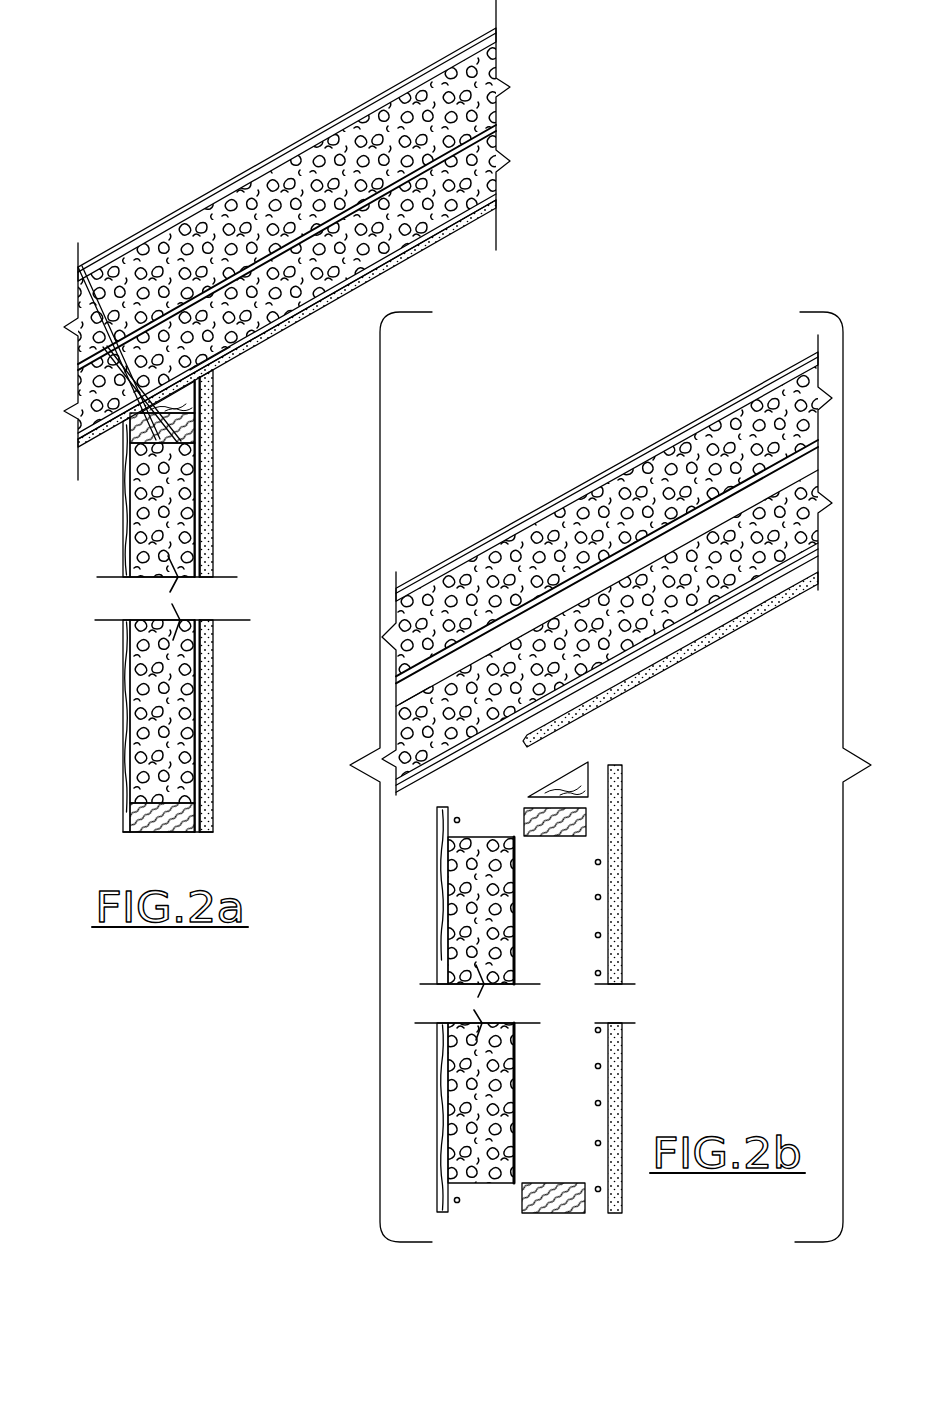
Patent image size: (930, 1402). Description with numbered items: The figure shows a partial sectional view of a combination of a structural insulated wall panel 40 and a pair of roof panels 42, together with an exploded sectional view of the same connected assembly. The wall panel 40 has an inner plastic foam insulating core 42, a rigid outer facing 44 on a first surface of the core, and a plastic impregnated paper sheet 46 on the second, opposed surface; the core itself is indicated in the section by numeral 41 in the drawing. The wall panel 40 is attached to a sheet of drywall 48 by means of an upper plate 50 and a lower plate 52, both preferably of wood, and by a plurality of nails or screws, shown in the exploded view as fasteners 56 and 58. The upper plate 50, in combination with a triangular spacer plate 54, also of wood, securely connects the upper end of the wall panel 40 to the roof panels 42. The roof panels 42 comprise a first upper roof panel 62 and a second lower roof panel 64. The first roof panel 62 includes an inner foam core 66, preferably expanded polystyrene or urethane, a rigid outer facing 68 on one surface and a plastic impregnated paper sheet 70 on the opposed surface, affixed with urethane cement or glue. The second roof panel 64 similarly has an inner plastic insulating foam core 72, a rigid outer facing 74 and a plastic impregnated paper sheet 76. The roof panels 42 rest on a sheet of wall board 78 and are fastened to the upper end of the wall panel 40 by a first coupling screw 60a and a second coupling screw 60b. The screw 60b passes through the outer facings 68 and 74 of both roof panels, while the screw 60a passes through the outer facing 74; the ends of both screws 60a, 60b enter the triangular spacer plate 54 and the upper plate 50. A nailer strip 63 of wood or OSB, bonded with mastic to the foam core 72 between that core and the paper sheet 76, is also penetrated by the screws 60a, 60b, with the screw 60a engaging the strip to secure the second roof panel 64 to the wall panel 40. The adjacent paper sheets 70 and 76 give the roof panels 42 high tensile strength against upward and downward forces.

In FIG. 2a, the wall panel 40 is at (170, 623).
In FIG. 2a, the insulating foam core of wall panel 41 is at (158, 682).
In FIG. 2a, the roof panels 42 is at (357, 262).
In FIG. 2b, the roof panels 42 is at (477, 1172).
In FIG. 2a, the rigid outer facing 44 is at (127, 760).
In FIG. 2b, the rigid outer facing 44 is at (447, 1057).
In FIG. 2a, the plastic impregnated paper sheet 46 is at (196, 651).
In FIG. 2b, the plastic impregnated paper sheet 46 is at (516, 1087).
In FIG. 2a, the sheet of drywall 48 is at (212, 743).
In FIG. 2b, the sheet of drywall 48 is at (621, 818).
In FIG. 2a, the upper plate 50 is at (197, 437).
In FIG. 2b, the upper plate 50 is at (563, 840).
In FIG. 2a, the lower plate 52 is at (163, 823).
In FIG. 2b, the lower plate 52 is at (563, 1188).
In FIG. 2a, the triangular spacer plate 54 is at (188, 405).
In FIG. 2b, the triangular spacer plate 54 is at (558, 780).
In FIG. 2b, the fastener 56 is at (460, 819).
In FIG. 2b, the fastener 58 is at (595, 971).
In FIG. 2a, the first coupling screw 60a is at (118, 417).
In FIG. 2a, the second coupling screw 60b is at (98, 330).
In FIG. 2a, the first upper roof panel 62 is at (329, 188).
In FIG. 2b, the first upper roof panel 62 is at (607, 501).
In FIG. 2a, the nailer strip 63 is at (222, 365).
In FIG. 2b, the nailer strip 63 is at (400, 703).
In FIG. 2a, the second lower roof panel 64 is at (364, 283).
In FIG. 2b, the second lower roof panel 64 is at (615, 631).
In FIG. 2a, the inner foam core 66 is at (492, 58).
In FIG. 2b, the inner foam core 66 is at (578, 532).
In FIG. 2a, the rigid outer facing 68 is at (470, 45).
In FIG. 2b, the rigid outer facing 68 is at (770, 382).
In FIG. 2a, the plastic impregnated paper sheet 70 is at (498, 128).
In FIG. 2b, the plastic impregnated paper sheet 70 is at (668, 524).
In FIG. 2a, the inner plastic insulating foam core 72 is at (485, 182).
In FIG. 2b, the inner plastic insulating foam core 72 is at (732, 557).
In FIG. 2a, the rigid outer facing 74 is at (498, 203).
In FIG. 2b, the rigid outer facing 74 is at (640, 657).
In FIG. 2a, the plastic impregnated paper sheet 76 is at (500, 132).
In FIG. 2b, the plastic impregnated paper sheet 76 is at (507, 640).
In FIG. 2a, the sheet of wall board 78 is at (438, 242).
In FIG. 2b, the sheet of wall board 78 is at (622, 692).